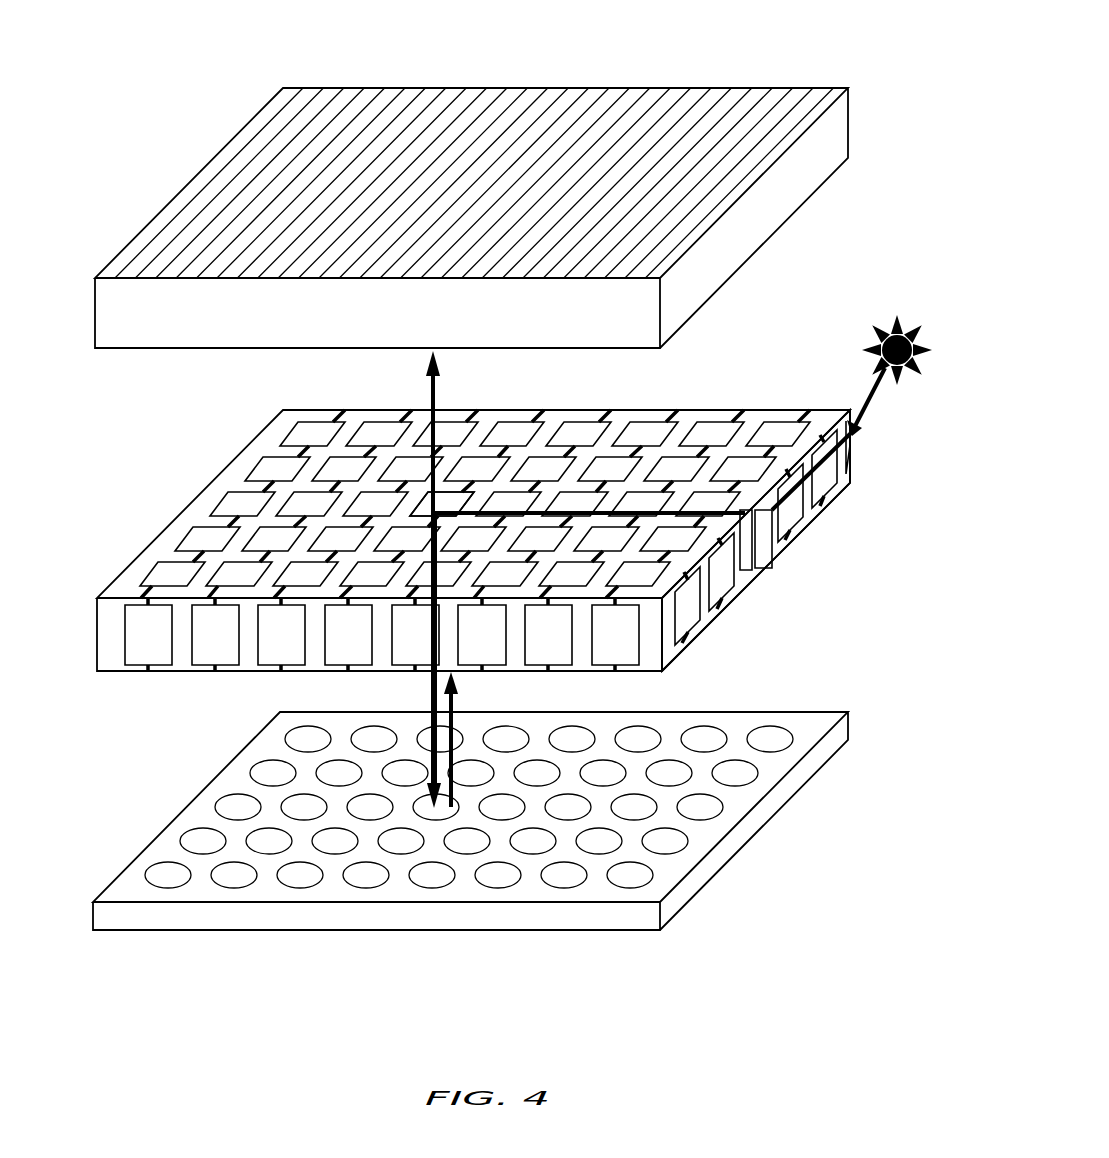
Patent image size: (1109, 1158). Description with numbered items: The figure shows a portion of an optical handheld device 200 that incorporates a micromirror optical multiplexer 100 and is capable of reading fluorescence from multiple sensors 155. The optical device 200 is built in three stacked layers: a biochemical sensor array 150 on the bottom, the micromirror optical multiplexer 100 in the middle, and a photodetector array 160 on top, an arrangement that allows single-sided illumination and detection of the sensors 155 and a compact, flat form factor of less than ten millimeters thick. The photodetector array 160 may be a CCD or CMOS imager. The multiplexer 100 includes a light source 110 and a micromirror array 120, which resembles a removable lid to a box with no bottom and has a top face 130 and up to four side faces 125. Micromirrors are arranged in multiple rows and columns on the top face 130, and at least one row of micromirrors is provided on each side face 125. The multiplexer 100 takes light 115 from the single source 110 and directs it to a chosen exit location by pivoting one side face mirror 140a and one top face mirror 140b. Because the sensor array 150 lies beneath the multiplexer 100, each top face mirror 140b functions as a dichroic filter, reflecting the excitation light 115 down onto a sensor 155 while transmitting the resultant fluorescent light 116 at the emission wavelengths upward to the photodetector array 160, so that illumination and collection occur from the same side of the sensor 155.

The micromirror optical multiplexer 100 is at (164, 500).
The light source 110 is at (895, 331).
The light 115 is at (870, 404).
The light 116 is at (430, 397).
The micromirror array 120 is at (748, 574).
The side face 125 is at (707, 633).
The top face 130 is at (752, 417).
The side face mirror 140a is at (766, 566).
The top face mirror 140b is at (450, 493).
The biochemical sensor array 150 is at (418, 948).
The sensor 155 is at (455, 812).
The photodetector array 160 is at (578, 105).
The optical device 200 is at (806, 859).